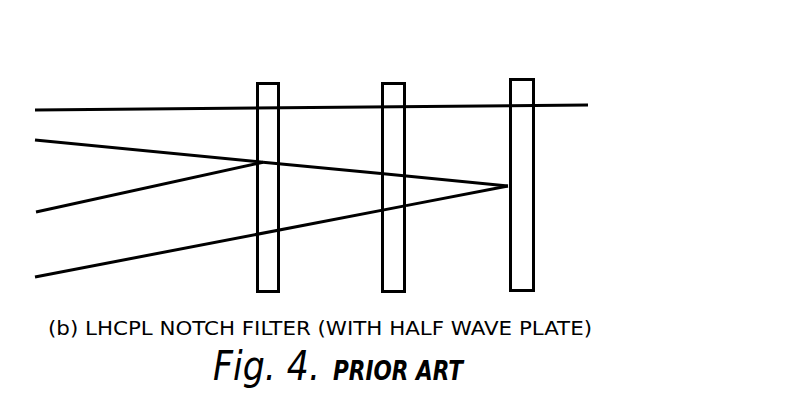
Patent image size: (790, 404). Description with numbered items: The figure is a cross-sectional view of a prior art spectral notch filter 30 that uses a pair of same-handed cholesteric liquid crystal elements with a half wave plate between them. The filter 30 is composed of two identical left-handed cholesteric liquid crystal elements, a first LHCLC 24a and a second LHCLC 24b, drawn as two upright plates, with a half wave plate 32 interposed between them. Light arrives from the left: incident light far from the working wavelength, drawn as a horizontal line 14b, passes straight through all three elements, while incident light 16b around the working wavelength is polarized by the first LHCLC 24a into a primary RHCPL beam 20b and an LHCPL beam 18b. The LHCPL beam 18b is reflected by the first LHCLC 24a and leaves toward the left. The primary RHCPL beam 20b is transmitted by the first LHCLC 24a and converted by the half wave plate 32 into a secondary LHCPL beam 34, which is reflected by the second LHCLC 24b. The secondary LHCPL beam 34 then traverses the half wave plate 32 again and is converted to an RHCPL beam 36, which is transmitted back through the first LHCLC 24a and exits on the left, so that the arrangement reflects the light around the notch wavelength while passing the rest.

The spectral notch filter 30 is at (202, 38).
The incident light far from WL 14b is at (227, 108).
The incident light 16b is at (68, 143).
The LHCPL beam 18b is at (183, 180).
The primary RHCPL beam 20b is at (373, 160).
The first LHCLC 24a is at (270, 40).
The second LHCLC 24b is at (530, 38).
The half wave plate 32 is at (399, 40).
The secondary LHCPL beam 34 is at (422, 173).
The RHCPL beam 36 is at (198, 246).